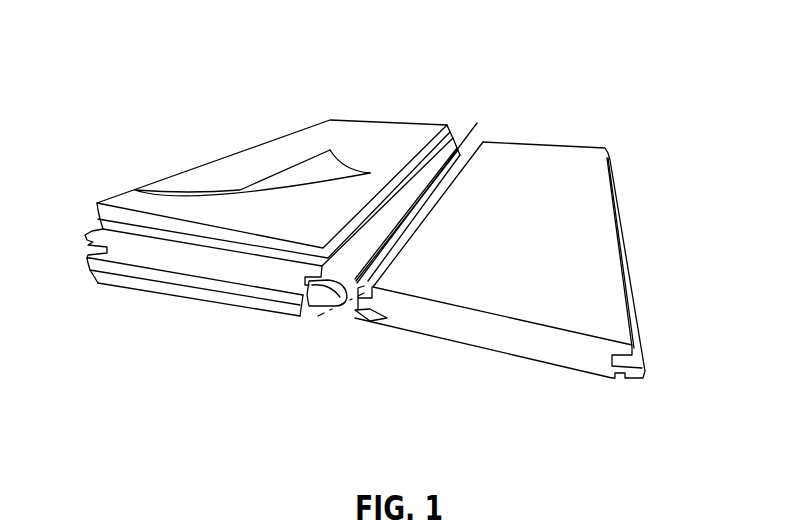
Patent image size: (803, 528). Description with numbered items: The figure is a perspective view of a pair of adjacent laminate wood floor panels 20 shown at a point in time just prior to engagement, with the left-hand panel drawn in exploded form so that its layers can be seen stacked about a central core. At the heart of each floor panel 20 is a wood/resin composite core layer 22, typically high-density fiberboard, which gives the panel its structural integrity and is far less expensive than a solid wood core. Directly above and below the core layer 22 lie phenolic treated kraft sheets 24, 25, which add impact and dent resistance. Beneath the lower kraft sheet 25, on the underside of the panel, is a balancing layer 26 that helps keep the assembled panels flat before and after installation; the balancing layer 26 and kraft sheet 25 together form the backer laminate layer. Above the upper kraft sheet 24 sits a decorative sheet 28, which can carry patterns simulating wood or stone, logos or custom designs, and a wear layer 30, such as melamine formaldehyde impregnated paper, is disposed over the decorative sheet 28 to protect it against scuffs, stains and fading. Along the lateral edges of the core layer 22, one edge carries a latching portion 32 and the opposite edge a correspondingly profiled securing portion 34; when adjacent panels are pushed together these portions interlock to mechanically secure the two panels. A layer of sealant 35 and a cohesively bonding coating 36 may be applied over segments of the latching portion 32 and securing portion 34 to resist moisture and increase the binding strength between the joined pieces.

The floor panel 20 is at (302, 120).
The core layer 22 is at (205, 268).
The upper kraft sheet 24 is at (101, 214).
The lower kraft sheet 25 is at (88, 263).
The balancing layer 26 is at (147, 290).
The decorative sheet 28 is at (132, 200).
The wear layer 30 is at (331, 148).
The latching portion 32 is at (628, 260).
The securing portion 34 is at (365, 318).
The layer of sealant 35 is at (352, 318).
The cohesively bonding coating 36 is at (312, 300).